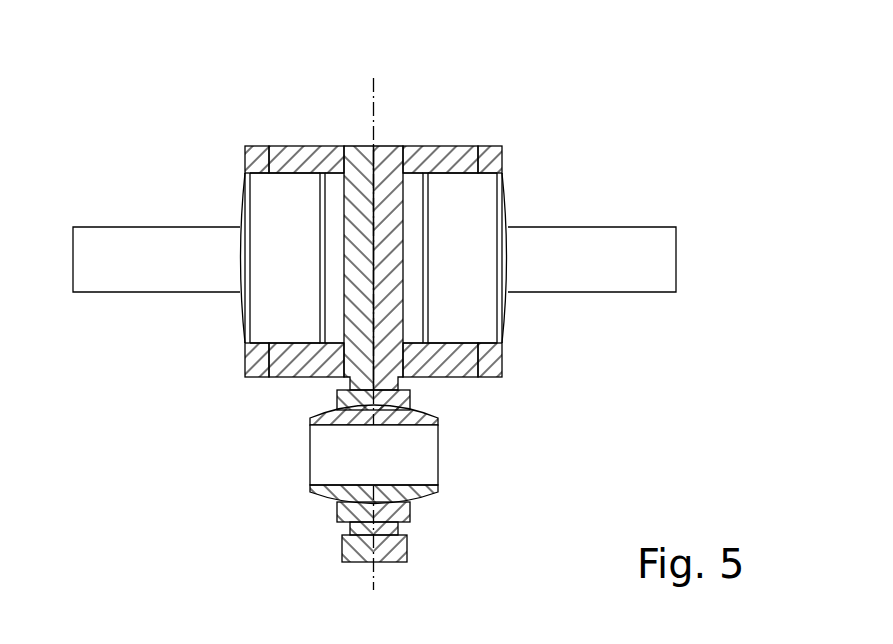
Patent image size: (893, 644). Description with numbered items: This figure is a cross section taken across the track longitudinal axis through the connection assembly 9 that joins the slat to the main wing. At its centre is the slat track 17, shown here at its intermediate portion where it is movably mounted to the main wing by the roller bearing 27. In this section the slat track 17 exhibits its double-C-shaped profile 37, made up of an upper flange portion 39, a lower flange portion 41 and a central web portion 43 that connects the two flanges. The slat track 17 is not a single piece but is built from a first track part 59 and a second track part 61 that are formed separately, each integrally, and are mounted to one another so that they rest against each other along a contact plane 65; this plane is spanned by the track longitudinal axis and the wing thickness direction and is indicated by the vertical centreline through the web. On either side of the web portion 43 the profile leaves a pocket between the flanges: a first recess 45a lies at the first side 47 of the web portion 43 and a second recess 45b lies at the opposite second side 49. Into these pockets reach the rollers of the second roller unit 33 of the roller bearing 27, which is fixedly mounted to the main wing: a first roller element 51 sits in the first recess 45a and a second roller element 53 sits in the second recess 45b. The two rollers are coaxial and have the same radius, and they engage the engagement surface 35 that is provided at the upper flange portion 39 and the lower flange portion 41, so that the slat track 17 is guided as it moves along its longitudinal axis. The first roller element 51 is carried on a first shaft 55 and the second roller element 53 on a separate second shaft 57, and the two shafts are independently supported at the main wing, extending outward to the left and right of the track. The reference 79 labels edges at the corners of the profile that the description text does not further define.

The connection assembly 9 is at (567, 96).
The slat track 17 is at (441, 163).
The roller bearing 27 is at (205, 124).
The second roller unit 33 is at (382, 268).
The engagement surface 35 is at (294, 167).
The double-C-shaped profile 37 is at (578, 412).
The upper flange portion 39 is at (313, 165).
The lower flange portion 41 is at (295, 378).
The web portion 43 is at (345, 277).
The first recess 45a is at (333, 203).
The second recess 45b is at (415, 192).
The first side 47 is at (345, 318).
The second side 49 is at (405, 318).
The first roller element 51 is at (274, 258).
The second roller element 53 is at (476, 258).
The first shaft 55 is at (102, 275).
The second shaft 57 is at (657, 273).
The first track part 59 is at (258, 161).
The second track part 61 is at (496, 161).
The contact plane 65 is at (373, 86).
The bulged side walls 79 is at (233, 346).